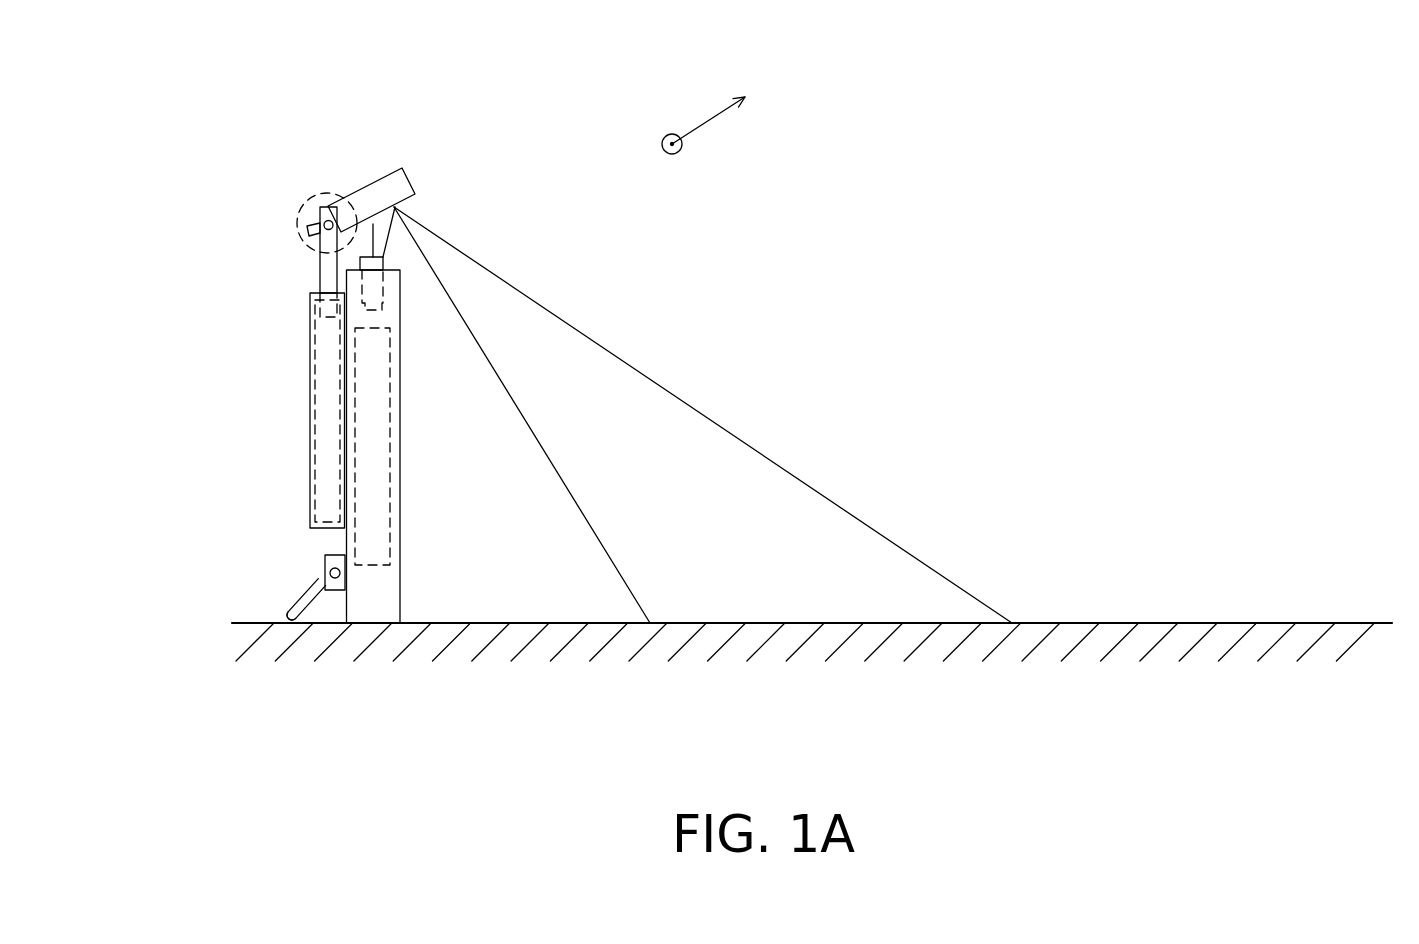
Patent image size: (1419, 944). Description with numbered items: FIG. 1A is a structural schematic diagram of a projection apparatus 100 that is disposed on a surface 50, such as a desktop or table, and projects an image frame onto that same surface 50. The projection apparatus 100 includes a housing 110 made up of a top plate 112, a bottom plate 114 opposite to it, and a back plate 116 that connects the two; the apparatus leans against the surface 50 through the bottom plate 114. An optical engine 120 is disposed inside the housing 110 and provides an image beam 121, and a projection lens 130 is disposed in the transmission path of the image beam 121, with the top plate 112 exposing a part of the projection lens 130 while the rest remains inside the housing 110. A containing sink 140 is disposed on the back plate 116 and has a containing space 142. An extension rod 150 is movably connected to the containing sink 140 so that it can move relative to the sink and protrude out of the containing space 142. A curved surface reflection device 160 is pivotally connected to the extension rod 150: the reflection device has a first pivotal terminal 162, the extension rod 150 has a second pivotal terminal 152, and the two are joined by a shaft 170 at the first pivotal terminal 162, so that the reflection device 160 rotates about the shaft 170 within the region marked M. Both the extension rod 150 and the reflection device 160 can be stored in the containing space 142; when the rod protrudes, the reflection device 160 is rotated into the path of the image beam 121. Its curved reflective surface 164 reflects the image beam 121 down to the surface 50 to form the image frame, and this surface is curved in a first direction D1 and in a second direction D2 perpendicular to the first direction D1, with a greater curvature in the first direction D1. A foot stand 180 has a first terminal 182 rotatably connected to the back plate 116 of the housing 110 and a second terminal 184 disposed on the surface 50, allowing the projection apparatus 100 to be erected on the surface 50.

The surface 50 is at (1269, 612).
The projection apparatus 100 is at (218, 468).
The housing 110 is at (399, 477).
The top plate 112 is at (397, 258).
The bottom plate 114 is at (365, 623).
The back plate 116 is at (345, 540).
The optical engine 120 is at (390, 514).
The image beam 121 is at (387, 232).
The projection lens 130 is at (362, 262).
The containing sink 140 is at (277, 410).
The containing space 142 is at (322, 396).
The extension rod 150 is at (281, 163).
The second pivotal terminal 152 is at (330, 206).
The curved surface reflection device 160 is at (378, 149).
The first pivotal terminal 162 is at (312, 205).
The curved reflective surface 164 is at (412, 208).
The shaft 170 is at (327, 206).
The foot stand 180 is at (255, 686).
The first terminal 182 is at (322, 595).
The second terminal 184 is at (292, 623).
The rotation region M is at (296, 218).
The first direction D1 is at (672, 155).
The second direction D2 is at (727, 107).